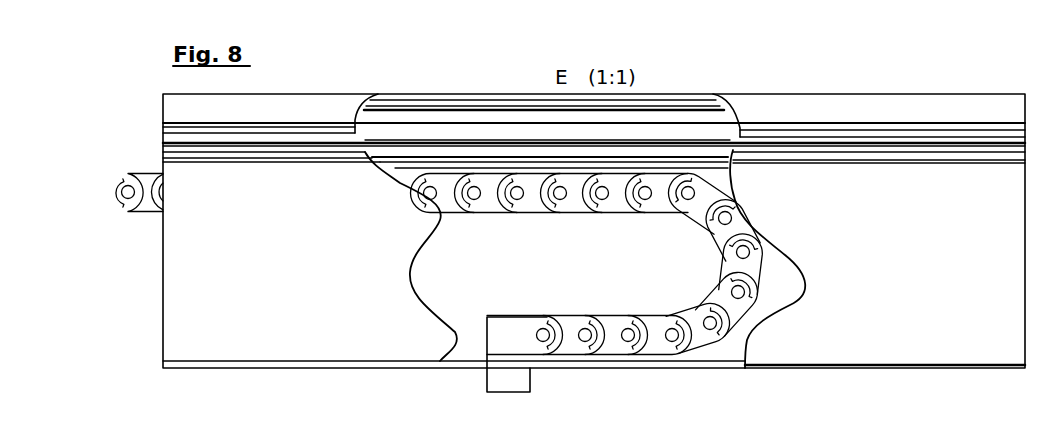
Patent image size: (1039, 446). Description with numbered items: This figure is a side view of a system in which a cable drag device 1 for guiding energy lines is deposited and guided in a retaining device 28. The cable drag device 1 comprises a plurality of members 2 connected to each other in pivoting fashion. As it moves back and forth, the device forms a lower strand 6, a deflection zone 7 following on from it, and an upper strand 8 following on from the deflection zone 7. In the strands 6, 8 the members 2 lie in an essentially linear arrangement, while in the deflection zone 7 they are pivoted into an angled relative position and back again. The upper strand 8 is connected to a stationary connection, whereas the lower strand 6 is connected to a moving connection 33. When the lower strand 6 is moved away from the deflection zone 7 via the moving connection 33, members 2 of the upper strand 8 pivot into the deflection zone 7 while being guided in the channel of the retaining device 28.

The cable drag device 1 is at (710, 354).
The members 2 is at (697, 340).
The lower strand 6 is at (585, 348).
The deflection zone 7 is at (765, 267).
The upper strand 8 is at (488, 296).
The retaining device 28 is at (220, 370).
The moving connection 33 is at (518, 338).